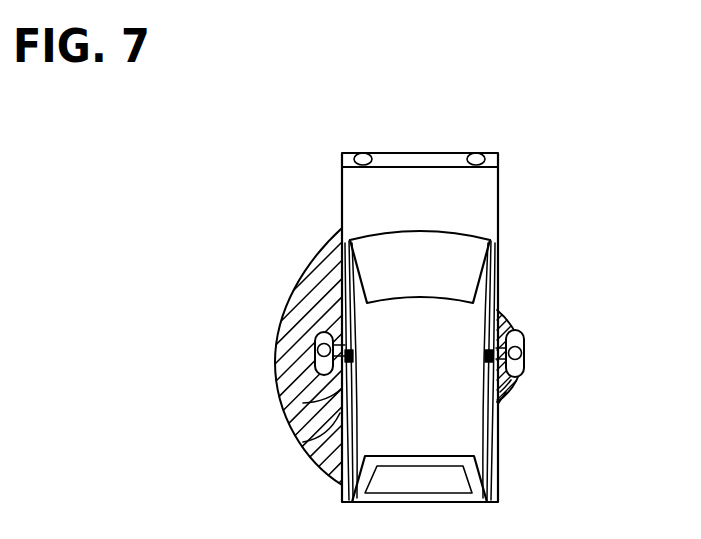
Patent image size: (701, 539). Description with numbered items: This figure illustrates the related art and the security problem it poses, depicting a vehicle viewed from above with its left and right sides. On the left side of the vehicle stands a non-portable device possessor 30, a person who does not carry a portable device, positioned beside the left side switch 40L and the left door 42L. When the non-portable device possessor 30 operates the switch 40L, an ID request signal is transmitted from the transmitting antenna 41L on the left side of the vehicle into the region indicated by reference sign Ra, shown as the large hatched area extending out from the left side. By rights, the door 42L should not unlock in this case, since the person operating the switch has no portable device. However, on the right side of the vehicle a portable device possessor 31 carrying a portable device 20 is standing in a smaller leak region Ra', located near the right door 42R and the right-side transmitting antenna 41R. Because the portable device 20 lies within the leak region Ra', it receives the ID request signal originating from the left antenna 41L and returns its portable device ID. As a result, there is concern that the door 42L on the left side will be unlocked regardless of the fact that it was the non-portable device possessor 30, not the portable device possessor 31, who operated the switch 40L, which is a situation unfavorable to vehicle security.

The region Ra is at (285, 347).
The leak region Ra' is at (550, 336).
The left side switch 40L is at (317, 336).
The non-portable device possessor 30 is at (345, 367).
The door 42L is at (303, 403).
The transmitting antenna 41L is at (303, 442).
The portable device 20 is at (573, 353).
The portable device possessor 31 is at (524, 352).
The door 42R is at (511, 380).
The transmitting antenna 41R is at (499, 400).